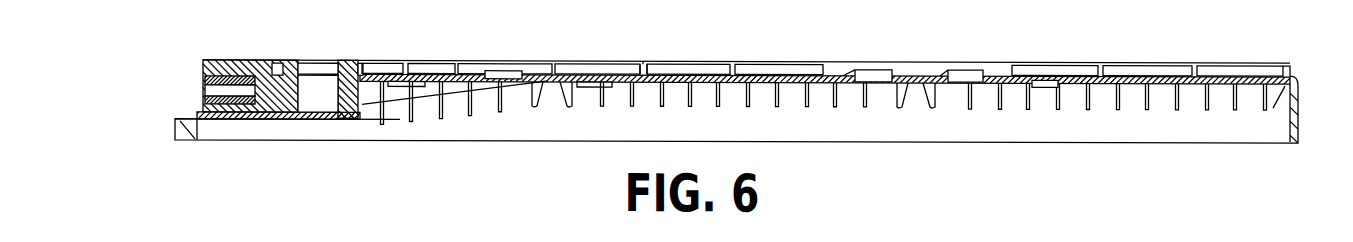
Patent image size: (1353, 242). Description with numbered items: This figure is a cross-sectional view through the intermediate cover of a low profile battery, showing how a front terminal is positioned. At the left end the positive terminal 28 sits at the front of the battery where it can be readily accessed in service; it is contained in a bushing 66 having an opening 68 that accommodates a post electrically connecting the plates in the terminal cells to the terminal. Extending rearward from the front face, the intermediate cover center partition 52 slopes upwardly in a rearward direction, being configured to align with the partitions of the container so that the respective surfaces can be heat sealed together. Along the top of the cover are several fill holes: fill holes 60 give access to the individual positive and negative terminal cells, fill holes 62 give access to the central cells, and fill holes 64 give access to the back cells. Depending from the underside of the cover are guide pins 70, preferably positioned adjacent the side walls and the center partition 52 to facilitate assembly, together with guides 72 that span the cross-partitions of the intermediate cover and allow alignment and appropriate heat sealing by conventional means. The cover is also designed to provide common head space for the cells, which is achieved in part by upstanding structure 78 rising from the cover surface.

The positive terminal 28 is at (198, 69).
The intermediate cover center partition 52 is at (513, 84).
The fill holes 60 is at (405, 62).
The fill holes 62 is at (585, 62).
The fill holes 64 is at (1050, 63).
The bushing 66 is at (249, 62).
The opening 68 is at (333, 103).
The guide pins 70 is at (441, 108).
The guides 72 is at (560, 100).
The upstanding structure 78 is at (648, 63).